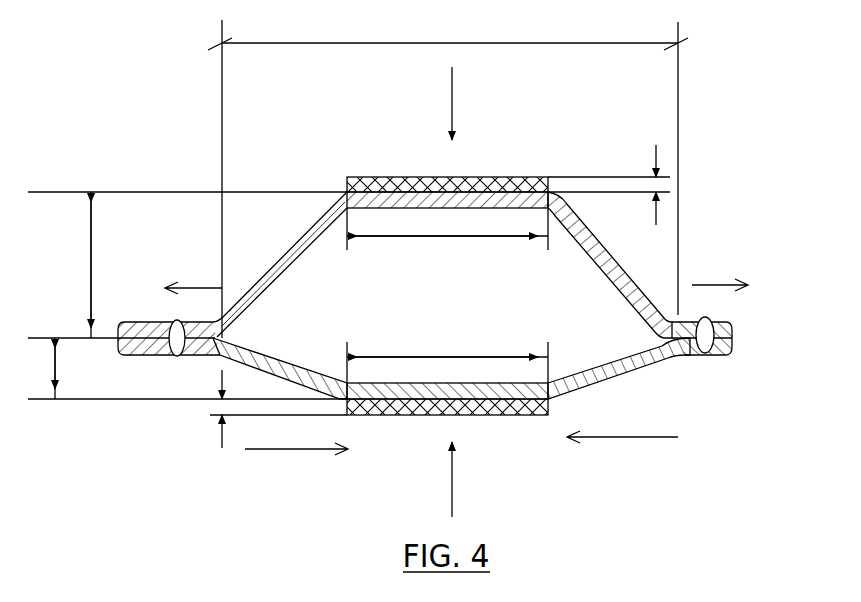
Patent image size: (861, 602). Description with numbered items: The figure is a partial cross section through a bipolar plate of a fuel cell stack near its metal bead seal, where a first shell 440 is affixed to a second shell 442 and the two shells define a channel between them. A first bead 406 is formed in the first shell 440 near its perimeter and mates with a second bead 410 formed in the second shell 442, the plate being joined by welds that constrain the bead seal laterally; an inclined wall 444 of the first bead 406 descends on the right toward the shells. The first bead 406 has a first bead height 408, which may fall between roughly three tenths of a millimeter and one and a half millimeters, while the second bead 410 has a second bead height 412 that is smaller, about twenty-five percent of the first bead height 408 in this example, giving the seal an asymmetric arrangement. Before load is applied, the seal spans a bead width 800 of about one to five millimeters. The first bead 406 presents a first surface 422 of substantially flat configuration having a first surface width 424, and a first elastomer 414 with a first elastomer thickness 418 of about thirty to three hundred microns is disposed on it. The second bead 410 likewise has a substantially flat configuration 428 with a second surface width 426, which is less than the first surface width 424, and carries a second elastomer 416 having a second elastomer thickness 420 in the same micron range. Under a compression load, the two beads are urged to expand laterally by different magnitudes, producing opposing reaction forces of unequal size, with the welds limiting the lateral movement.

The bead width 800 is at (453, 43).
The first surface 422 is at (393, 185).
The first elastomer 414 is at (535, 183).
The first elastomer thickness 418 is at (657, 152).
The first bead height 408 is at (92, 268).
The first bead 406 is at (287, 258).
The upper right inclined wall 444 is at (604, 273).
The first surface width 424 is at (440, 236).
The second surface width 426 is at (477, 353).
The first shell 440 is at (725, 324).
The second bead 410 is at (272, 365).
The second bead height 412 is at (58, 372).
The second shell 442 is at (723, 348).
The second elastomer 416 is at (548, 410).
The second elastomer thickness 420 is at (220, 443).
The substantially flat configuration 428 is at (508, 410).